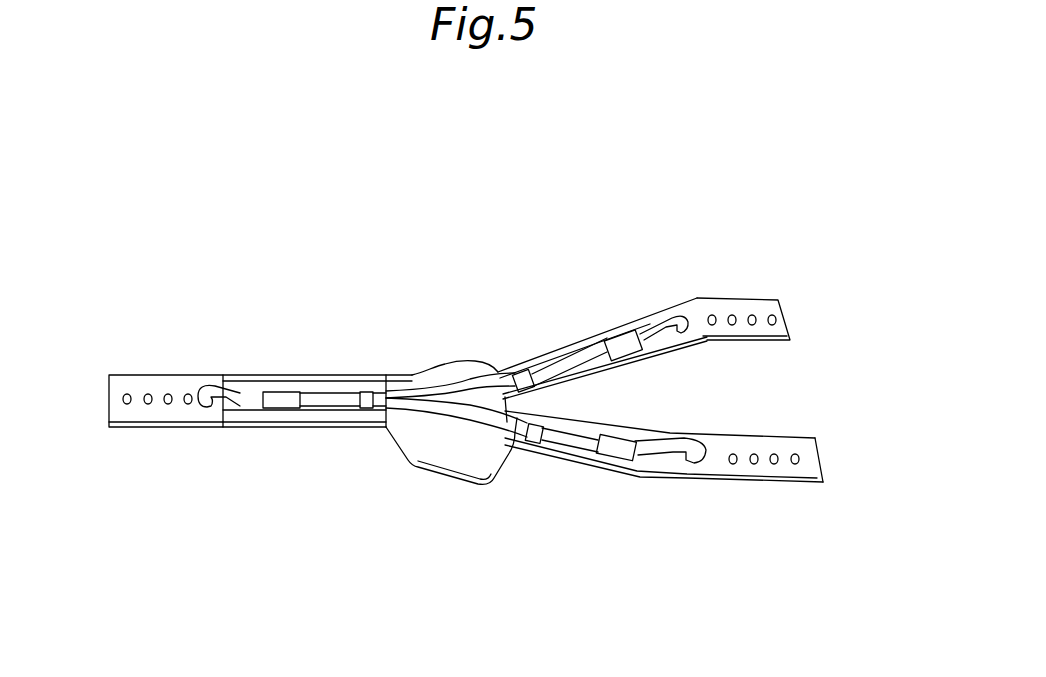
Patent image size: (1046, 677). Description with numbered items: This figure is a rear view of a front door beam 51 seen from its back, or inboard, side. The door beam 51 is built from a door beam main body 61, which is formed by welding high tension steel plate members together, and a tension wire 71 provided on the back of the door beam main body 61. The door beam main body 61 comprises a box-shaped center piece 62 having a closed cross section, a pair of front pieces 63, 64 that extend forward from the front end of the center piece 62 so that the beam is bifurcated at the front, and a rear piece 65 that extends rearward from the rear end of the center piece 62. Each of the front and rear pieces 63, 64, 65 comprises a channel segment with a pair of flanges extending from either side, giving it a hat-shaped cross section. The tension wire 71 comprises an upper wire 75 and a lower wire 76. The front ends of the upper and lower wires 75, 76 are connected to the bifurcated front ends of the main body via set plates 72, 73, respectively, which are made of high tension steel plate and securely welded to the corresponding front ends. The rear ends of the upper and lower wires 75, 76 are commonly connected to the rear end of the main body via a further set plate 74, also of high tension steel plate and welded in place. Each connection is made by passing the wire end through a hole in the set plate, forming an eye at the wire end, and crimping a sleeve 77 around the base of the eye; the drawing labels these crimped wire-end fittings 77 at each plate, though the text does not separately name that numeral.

The front door beam 51 is at (325, 186).
The door beam main body 61 is at (345, 375).
The center piece 62 is at (432, 462).
The front piece 63 is at (553, 356).
The front piece 64 is at (578, 470).
The rear piece 65 is at (330, 415).
The tension wire 71 is at (444, 385).
The set plate 72 is at (773, 300).
The set plate 73 is at (785, 472).
The set plate 74 is at (148, 390).
The upper wire 75 is at (480, 385).
The lower wire 76 is at (476, 422).
The hook fitting 77 is at (625, 332).